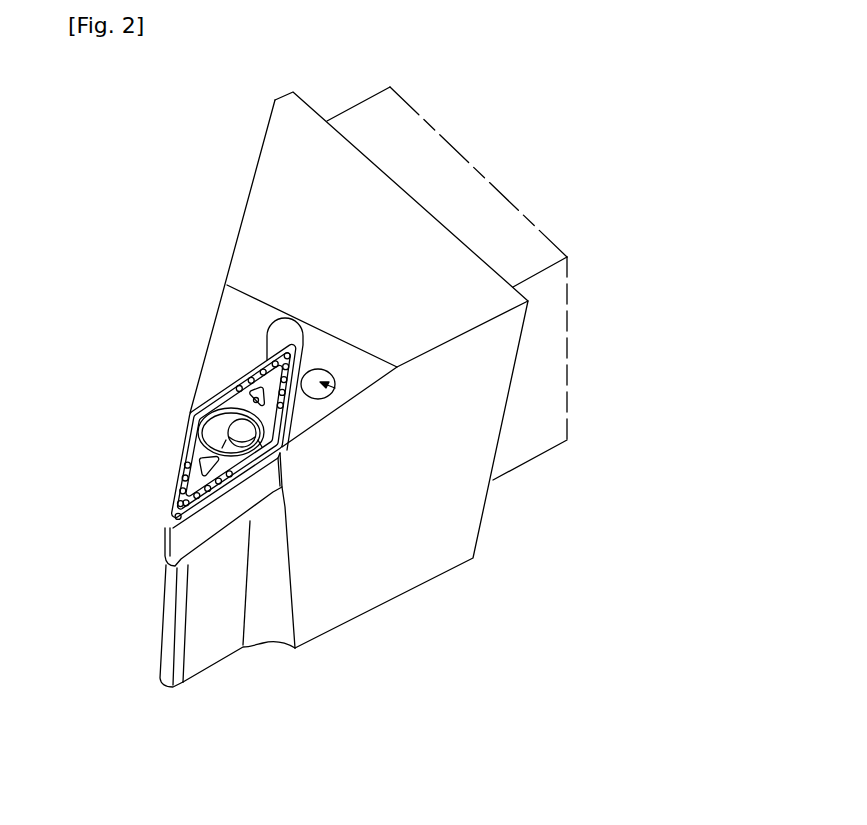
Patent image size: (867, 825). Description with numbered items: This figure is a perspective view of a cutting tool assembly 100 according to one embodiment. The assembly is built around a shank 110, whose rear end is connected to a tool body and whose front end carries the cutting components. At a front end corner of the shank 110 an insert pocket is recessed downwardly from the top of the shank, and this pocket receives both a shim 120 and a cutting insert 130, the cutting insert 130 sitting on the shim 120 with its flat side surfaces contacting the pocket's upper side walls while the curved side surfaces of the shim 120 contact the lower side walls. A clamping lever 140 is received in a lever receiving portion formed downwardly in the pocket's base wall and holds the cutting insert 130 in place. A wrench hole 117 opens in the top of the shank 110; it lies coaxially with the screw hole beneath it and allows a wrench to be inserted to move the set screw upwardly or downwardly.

The cutting tool assembly 100 is at (507, 145).
The shank 110 is at (256, 231).
The wrench hole 117 is at (335, 388).
The shim 120 is at (205, 547).
The cutting insert 130 is at (178, 473).
The clamping lever 140 is at (240, 427).